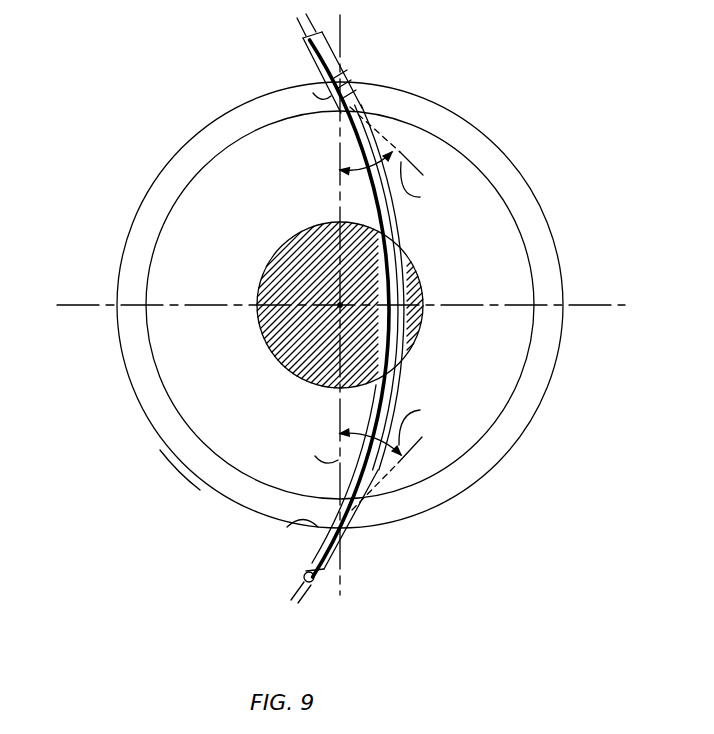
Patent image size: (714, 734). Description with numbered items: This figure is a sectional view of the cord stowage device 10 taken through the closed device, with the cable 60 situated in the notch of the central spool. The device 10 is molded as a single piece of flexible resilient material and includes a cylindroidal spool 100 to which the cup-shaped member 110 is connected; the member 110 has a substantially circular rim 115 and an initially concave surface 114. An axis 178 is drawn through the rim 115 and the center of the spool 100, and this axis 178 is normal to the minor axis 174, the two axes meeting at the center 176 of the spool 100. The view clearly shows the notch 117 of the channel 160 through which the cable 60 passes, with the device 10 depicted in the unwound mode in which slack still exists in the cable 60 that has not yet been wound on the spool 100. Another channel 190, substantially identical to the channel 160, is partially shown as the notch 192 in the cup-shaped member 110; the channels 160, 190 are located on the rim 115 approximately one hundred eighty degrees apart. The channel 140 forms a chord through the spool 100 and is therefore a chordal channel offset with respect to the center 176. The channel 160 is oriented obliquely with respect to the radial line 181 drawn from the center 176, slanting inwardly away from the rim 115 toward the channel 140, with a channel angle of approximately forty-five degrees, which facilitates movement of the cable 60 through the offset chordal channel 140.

The cord stowage device 10 is at (353, 656).
The cable 60 is at (400, 233).
The spool 100 is at (283, 352).
The cup-shaped member 110 is at (477, 137).
The surface 114 is at (222, 178).
The rim 115 is at (177, 461).
The notch 117 is at (325, 95).
The channel 140 is at (387, 340).
The channel 160 is at (321, 80).
The minor axis 174 is at (600, 305).
The center 176 is at (340, 305).
The axis 178 is at (340, 44).
The radial line 181 is at (340, 198).
The channel 190 is at (360, 527).
The notch 192 is at (287, 524).